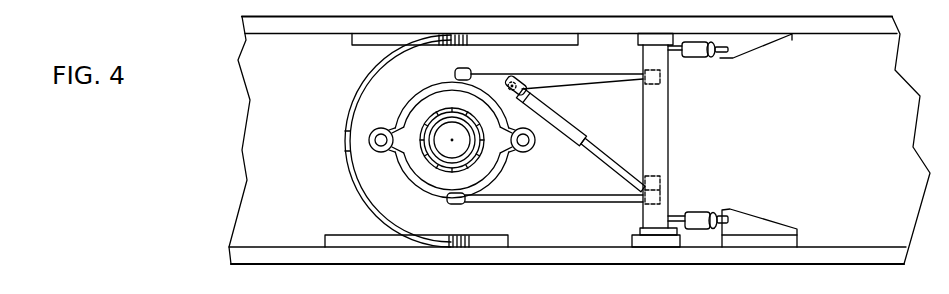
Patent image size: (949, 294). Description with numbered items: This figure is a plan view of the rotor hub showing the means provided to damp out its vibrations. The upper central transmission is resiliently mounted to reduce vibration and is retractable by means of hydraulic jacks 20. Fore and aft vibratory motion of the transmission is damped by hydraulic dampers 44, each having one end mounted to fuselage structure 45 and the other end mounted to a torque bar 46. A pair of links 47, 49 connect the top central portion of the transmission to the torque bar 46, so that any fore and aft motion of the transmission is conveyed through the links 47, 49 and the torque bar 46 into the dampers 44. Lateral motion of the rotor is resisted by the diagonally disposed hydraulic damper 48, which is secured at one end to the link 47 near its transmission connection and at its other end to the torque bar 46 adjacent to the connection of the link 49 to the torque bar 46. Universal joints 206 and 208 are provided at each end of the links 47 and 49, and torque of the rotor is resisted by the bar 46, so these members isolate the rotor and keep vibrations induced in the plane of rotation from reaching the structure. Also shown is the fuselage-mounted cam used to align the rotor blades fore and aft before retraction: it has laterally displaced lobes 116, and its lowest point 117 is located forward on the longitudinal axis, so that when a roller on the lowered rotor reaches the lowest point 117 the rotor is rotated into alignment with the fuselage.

The hydraulic jacks 20 is at (383, 122).
The hydraulic dampers 44 is at (703, 57).
The fuselage structure 45 is at (768, 45).
The torque bar 46 is at (668, 140).
The link 47 is at (601, 74).
The hydraulic damper 48 is at (588, 132).
The link 49 is at (551, 202).
The lobes 116 is at (416, 45).
The lowest point 117 is at (345, 141).
The universal joints 206 is at (456, 70).
The universal joints 208 is at (641, 80).